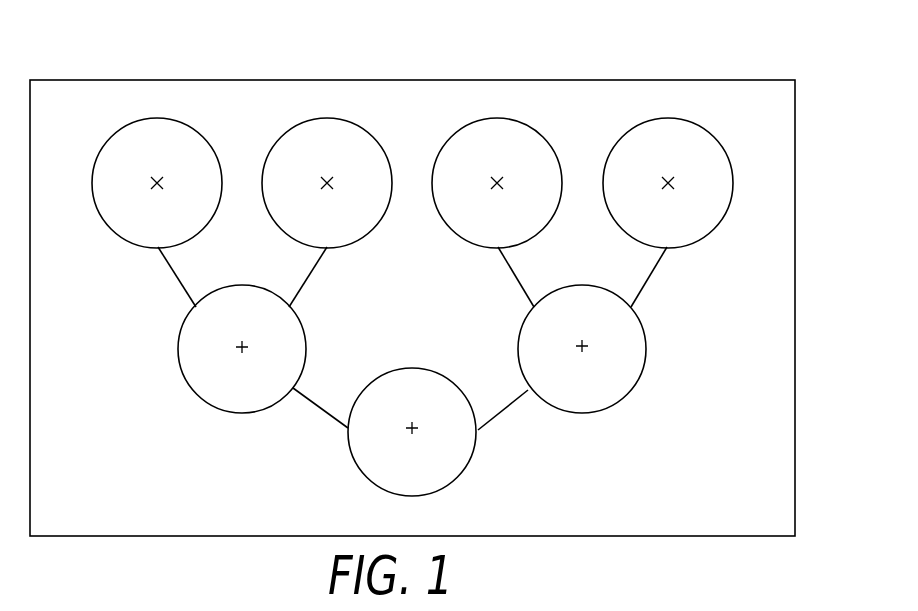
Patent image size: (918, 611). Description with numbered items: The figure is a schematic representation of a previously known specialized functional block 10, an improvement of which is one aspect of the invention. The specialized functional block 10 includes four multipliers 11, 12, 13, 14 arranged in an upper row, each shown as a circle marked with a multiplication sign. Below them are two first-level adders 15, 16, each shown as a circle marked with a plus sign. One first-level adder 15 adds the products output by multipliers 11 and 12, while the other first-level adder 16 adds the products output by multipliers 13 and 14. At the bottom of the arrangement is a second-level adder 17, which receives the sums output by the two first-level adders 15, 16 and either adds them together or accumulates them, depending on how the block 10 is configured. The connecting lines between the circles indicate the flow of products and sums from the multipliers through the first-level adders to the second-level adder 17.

The specialized functional block 10 is at (528, 40).
The multiplier 11 is at (155, 120).
The multiplier 12 is at (327, 120).
The multiplier 13 is at (497, 120).
The multiplier 14 is at (668, 120).
The first-level adder 15 is at (242, 287).
The first-level adder 16 is at (580, 287).
The second-level adder 17 is at (410, 370).